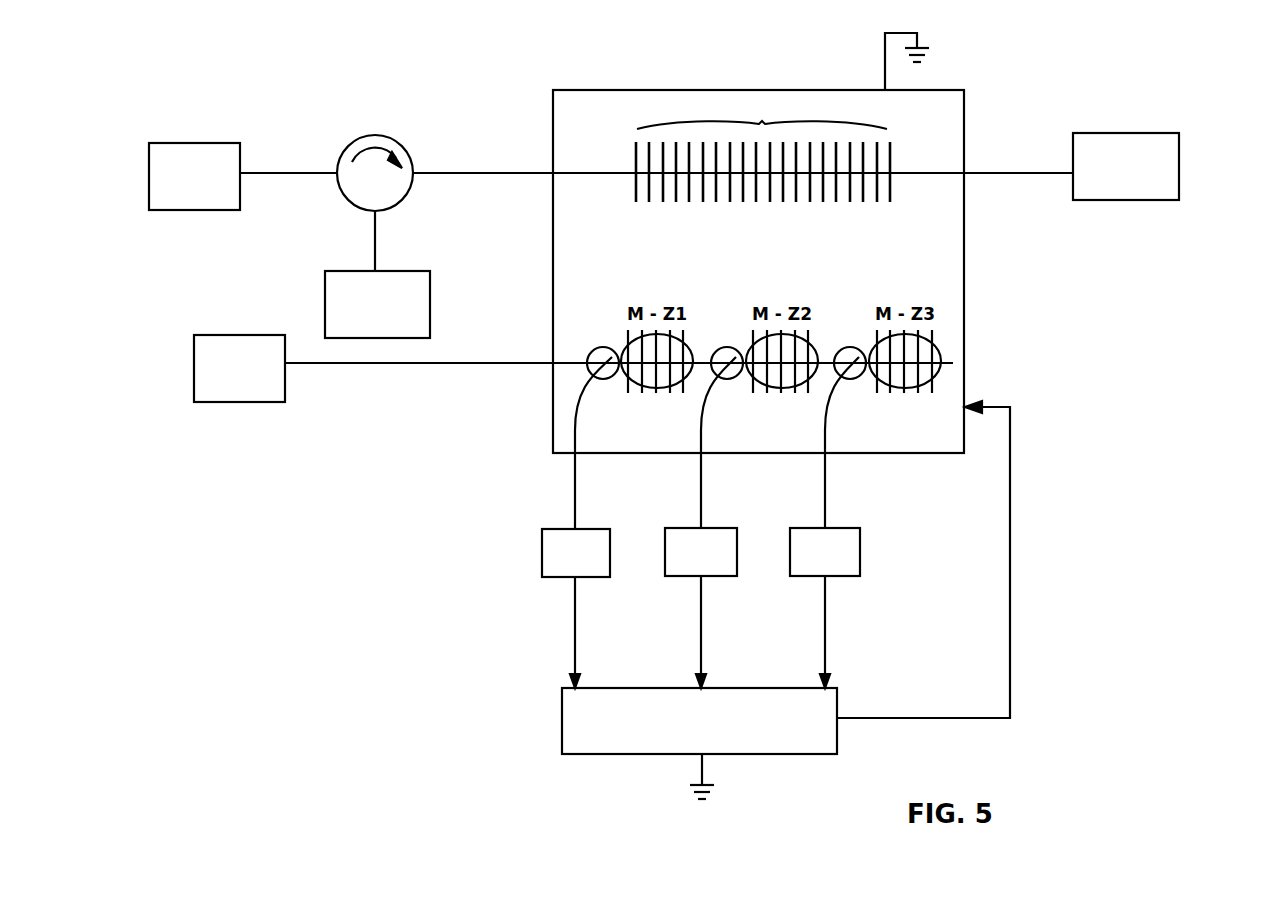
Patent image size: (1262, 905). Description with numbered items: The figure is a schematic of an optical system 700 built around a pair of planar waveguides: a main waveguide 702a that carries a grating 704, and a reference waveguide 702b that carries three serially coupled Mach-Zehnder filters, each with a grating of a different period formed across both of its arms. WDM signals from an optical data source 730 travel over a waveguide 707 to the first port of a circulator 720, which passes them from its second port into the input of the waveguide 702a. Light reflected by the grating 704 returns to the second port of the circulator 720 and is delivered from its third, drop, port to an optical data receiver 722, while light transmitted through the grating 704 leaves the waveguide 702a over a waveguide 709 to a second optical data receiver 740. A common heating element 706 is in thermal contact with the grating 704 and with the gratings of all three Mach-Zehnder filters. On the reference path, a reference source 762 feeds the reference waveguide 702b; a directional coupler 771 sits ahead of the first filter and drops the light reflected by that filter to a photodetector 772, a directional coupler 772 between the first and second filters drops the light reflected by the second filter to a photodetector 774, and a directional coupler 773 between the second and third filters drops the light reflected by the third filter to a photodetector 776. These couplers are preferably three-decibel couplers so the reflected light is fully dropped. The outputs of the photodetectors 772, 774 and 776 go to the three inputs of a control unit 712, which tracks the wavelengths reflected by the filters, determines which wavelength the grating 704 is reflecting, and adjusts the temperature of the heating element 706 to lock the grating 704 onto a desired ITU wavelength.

The optical system 700 is at (1158, 72).
The waveguide 702a is at (460, 173).
The reference waveguide 702b is at (468, 363).
The grating 704 is at (762, 122).
The common heating element 706 is at (945, 89).
The waveguide 707 is at (267, 173).
The waveguide 709 is at (1011, 173).
The control unit 712 is at (740, 688).
The circulator 720 is at (383, 138).
The optical data receiver 722 is at (388, 271).
The optical data source 730 is at (207, 142).
The optical data receiver 740 is at (1162, 133).
The reference source 762 is at (267, 335).
The directional coupler 771 is at (601, 347).
The directional coupler / photodetector 772 is at (725, 347).
The directional coupler 773 is at (850, 347).
The photodetector 774 is at (718, 529).
The photodetector 776 is at (842, 529).